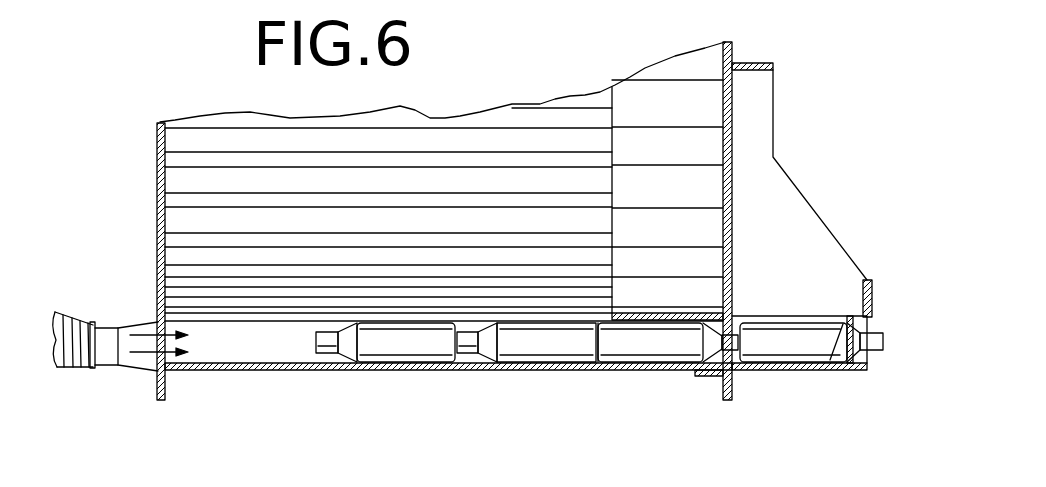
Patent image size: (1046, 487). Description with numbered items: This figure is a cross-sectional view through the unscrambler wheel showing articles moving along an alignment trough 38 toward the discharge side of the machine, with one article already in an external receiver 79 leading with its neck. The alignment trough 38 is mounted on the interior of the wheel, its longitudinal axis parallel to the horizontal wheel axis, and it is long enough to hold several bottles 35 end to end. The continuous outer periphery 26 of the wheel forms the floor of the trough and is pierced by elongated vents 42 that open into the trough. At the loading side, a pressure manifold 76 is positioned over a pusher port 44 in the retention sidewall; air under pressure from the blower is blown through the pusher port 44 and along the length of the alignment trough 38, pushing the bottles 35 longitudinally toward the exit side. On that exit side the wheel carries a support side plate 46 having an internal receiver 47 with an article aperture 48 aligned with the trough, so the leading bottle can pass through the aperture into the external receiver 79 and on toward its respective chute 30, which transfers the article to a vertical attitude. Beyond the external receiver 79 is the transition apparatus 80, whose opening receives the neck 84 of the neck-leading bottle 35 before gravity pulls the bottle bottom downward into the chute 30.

The continuous outer periphery 26 is at (402, 372).
The chute 30 is at (768, 185).
The bottle 35 is at (518, 348).
The alignment trough 38 is at (226, 342).
The elongated vent 42 is at (308, 372).
The pusher port 44 is at (153, 362).
The support side plate 46 is at (735, 62).
The internal receiver 47 is at (628, 372).
The article aperture 48 is at (742, 328).
The pressure manifold 76 is at (117, 330).
The external receiver 79 is at (782, 372).
The transition apparatus 80 is at (867, 332).
The neck 84 is at (877, 352).